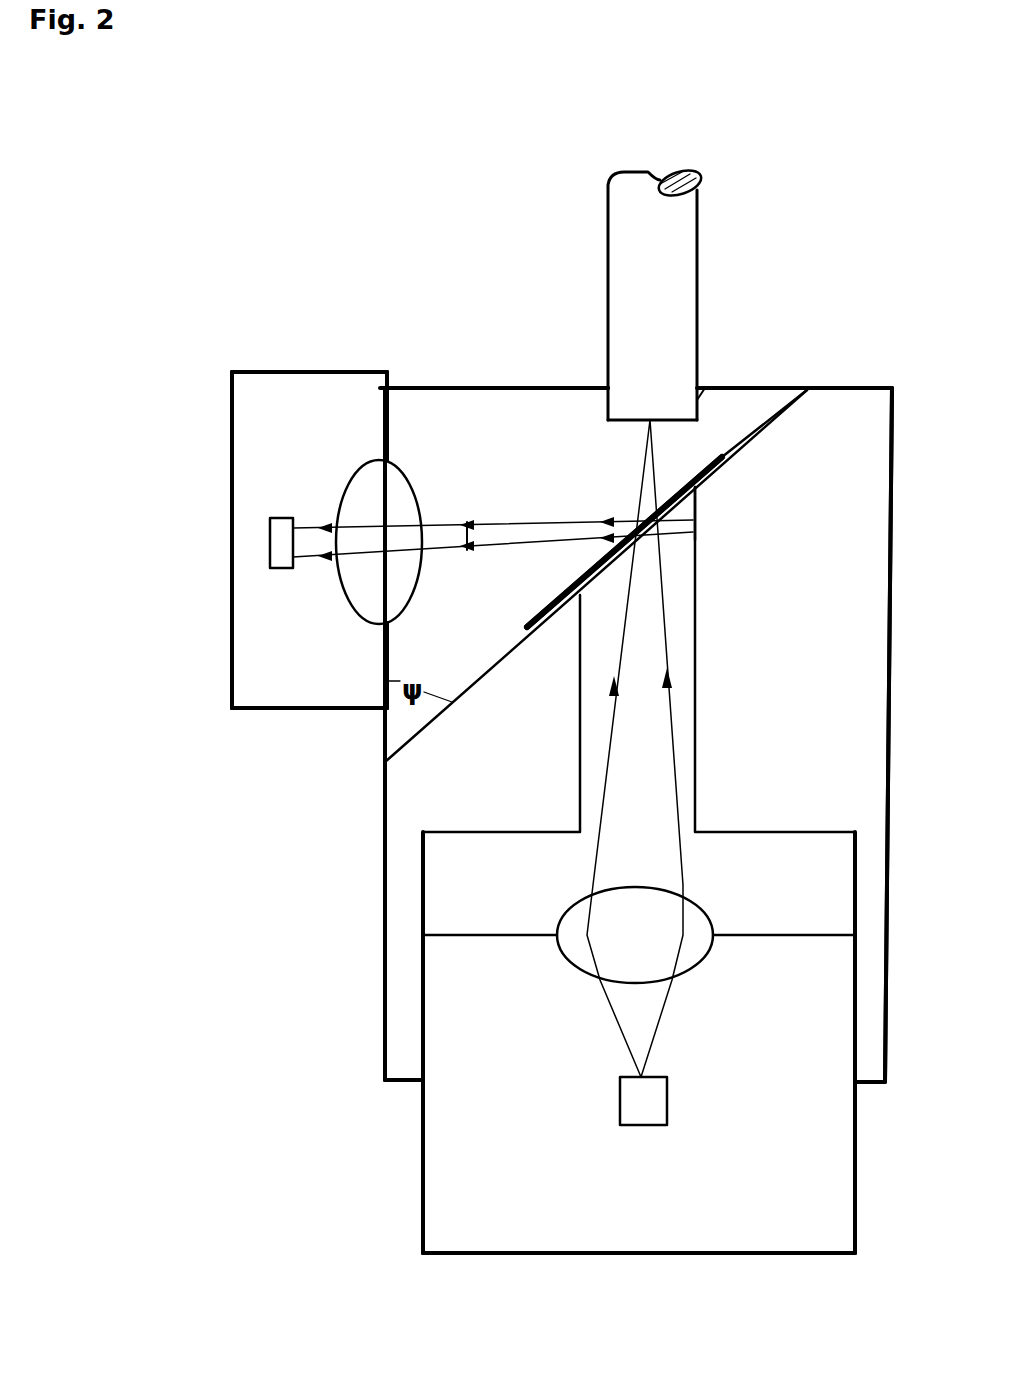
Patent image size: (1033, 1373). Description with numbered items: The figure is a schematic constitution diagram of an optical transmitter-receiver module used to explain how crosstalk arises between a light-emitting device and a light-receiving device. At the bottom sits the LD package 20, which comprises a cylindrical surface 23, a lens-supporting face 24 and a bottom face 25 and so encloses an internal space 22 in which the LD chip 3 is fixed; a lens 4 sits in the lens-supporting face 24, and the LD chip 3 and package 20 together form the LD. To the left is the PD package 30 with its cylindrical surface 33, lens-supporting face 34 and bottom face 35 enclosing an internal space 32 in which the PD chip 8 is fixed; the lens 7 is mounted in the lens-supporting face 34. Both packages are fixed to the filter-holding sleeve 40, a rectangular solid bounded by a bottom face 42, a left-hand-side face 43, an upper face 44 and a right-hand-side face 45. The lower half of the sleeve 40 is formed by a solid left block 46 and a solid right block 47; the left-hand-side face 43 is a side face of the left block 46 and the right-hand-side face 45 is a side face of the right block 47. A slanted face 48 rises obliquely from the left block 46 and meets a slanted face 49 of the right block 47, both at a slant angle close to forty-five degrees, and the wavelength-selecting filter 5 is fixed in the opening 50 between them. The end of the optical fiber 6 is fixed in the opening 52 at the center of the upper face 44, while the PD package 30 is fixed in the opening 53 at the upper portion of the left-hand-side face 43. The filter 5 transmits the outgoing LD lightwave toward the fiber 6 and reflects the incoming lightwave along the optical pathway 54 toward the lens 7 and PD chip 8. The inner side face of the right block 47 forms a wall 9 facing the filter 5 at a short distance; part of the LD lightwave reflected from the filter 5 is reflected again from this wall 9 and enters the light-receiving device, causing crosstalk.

The LD chip 3 is at (643, 1101).
The condensing lens 4 is at (635, 935).
The wavelength-selecting filter 5 is at (553, 612).
The optical fiber 6 is at (656, 293).
The lens 7 is at (379, 542).
The PD chip 8 is at (280, 518).
The wall 9 is at (698, 530).
The package 20 is at (580, 1255).
The internal space 22 is at (668, 1190).
The cylindrical surface 23 is at (425, 1200).
The lens-supporting face 24 is at (522, 935).
The bottom face 25 is at (706, 1255).
The package 30 is at (297, 372).
The internal space 32 is at (291, 672).
The cylindrical surface 33 is at (325, 708).
The lens-supporting face 34 is at (385, 418).
The bottom face 35 is at (232, 562).
The filter-holding sleeve 40 is at (663, 735).
The bottom face 42 is at (416, 1082).
The left-hand-side face 43 is at (383, 930).
The upper face 44 is at (505, 388).
The right-hand-side face 45 is at (890, 828).
The left block 46 is at (528, 742).
The right block 47 is at (772, 730).
The slanted face 48 is at (524, 642).
The slanted face 49 is at (748, 448).
The opening 50 is at (698, 498).
The opening 52 is at (607, 385).
The opening 53 is at (393, 386).
The optical pathway 54 is at (470, 524).